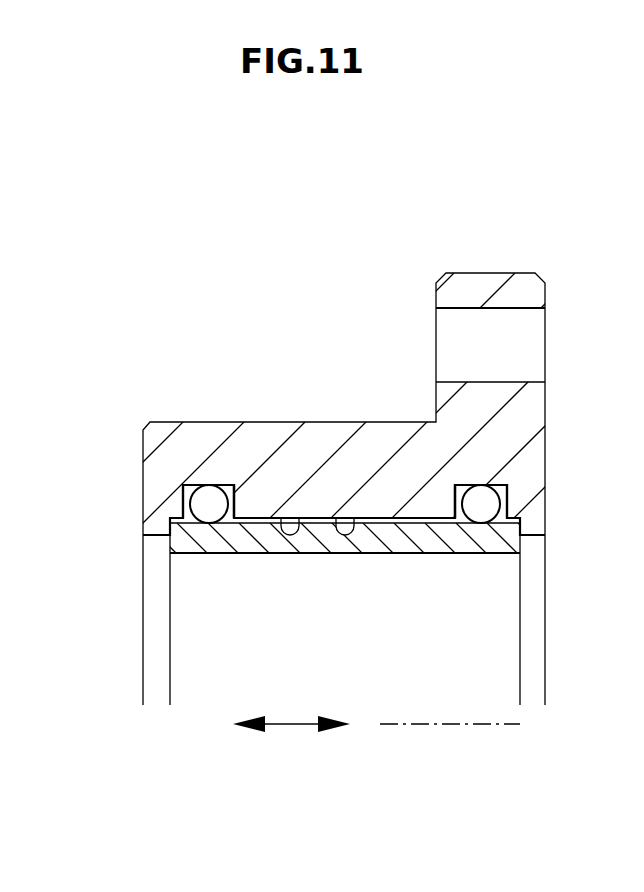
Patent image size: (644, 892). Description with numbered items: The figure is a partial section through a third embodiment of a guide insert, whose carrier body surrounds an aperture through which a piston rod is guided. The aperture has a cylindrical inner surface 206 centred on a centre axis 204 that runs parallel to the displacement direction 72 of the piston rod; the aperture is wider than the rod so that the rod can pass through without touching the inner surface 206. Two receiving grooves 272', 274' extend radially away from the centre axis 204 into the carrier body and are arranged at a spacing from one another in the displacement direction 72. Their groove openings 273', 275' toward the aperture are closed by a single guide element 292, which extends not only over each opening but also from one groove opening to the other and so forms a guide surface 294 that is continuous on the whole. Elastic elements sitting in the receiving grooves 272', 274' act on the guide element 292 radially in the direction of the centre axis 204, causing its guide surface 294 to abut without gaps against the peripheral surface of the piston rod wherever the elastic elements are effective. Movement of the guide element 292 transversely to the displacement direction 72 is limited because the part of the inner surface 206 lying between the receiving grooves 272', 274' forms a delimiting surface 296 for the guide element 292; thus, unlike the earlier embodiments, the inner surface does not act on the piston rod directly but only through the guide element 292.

The receiving groove 272' is at (188, 426).
The receiving groove 274' is at (442, 426).
The groove opening 273' is at (209, 568).
The groove opening 275' is at (481, 568).
The inner surface 206 is at (300, 530).
The delimiting surface 296 is at (353, 527).
The guide element 292 is at (283, 548).
The guide surface 294 is at (371, 548).
The displacement direction 72 is at (289, 725).
The centre axis 204 is at (446, 725).